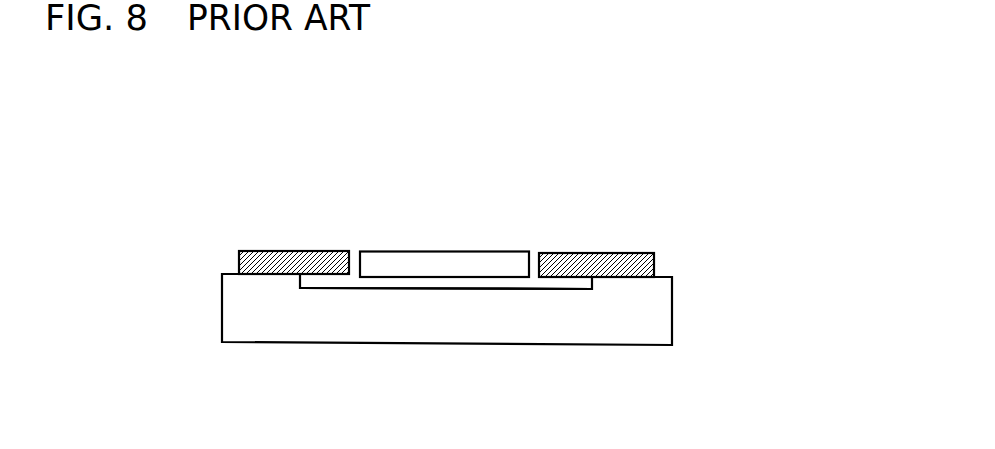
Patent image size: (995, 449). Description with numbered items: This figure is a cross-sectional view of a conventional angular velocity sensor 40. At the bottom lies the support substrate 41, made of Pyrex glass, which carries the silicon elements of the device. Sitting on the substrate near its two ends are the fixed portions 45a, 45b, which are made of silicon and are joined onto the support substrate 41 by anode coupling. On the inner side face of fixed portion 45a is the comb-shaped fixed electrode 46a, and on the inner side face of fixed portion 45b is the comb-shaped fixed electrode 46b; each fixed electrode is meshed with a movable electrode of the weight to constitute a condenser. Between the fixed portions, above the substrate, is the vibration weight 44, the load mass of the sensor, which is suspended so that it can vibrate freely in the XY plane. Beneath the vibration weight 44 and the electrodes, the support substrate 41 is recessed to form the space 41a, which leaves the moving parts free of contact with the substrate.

The angular velocity sensor 40 is at (705, 167).
The support substrate 41 is at (662, 310).
The space 41a is at (468, 284).
The vibration weight 44 is at (431, 265).
The fixed portion 45a is at (636, 262).
The fixed portion 45b is at (262, 262).
The comb-shaped fixed electrode 46a is at (559, 262).
The comb-shaped fixed electrode 46b is at (317, 262).